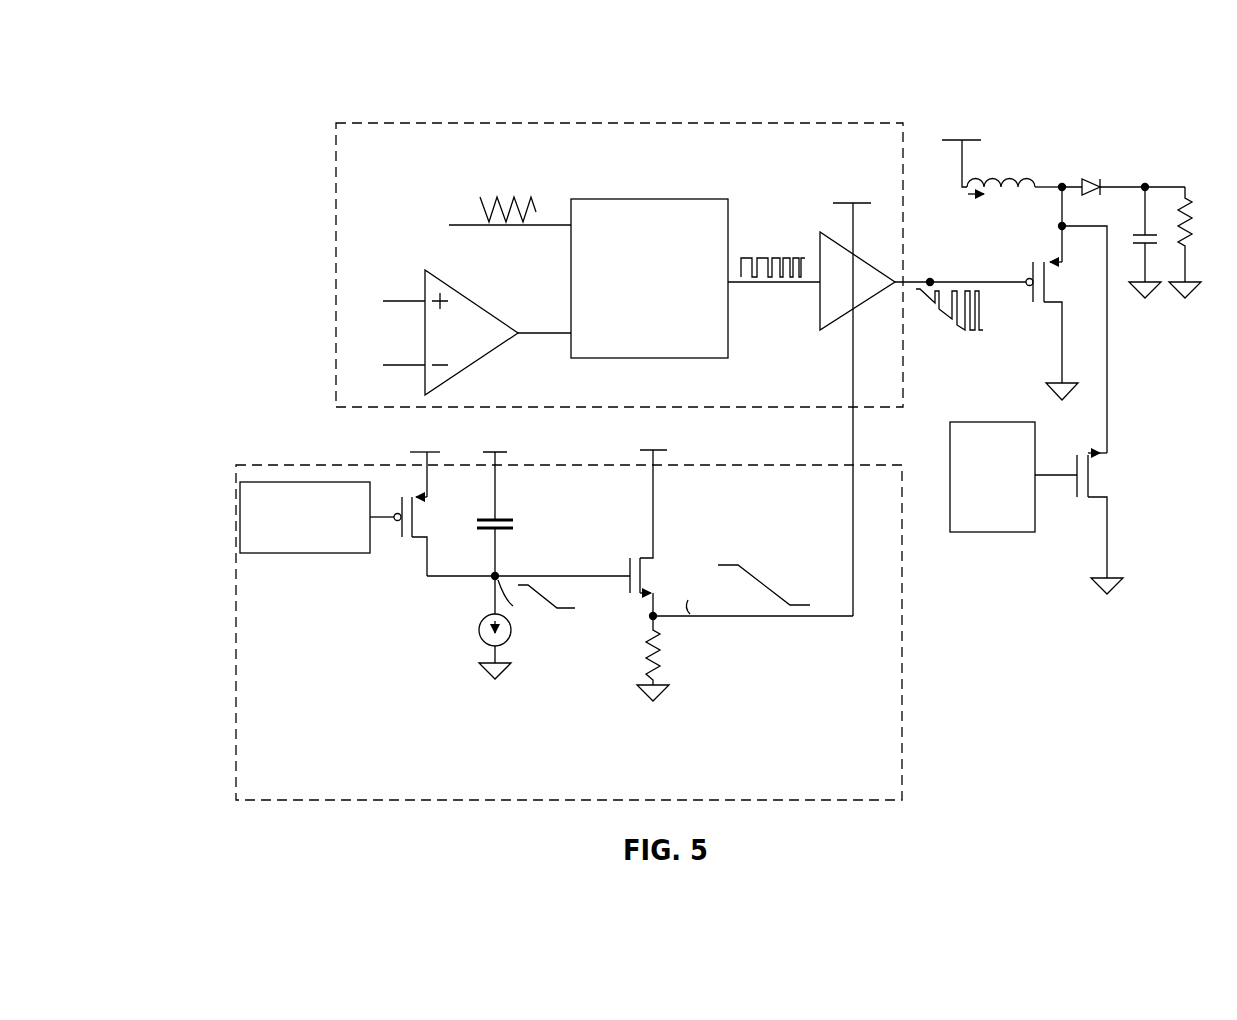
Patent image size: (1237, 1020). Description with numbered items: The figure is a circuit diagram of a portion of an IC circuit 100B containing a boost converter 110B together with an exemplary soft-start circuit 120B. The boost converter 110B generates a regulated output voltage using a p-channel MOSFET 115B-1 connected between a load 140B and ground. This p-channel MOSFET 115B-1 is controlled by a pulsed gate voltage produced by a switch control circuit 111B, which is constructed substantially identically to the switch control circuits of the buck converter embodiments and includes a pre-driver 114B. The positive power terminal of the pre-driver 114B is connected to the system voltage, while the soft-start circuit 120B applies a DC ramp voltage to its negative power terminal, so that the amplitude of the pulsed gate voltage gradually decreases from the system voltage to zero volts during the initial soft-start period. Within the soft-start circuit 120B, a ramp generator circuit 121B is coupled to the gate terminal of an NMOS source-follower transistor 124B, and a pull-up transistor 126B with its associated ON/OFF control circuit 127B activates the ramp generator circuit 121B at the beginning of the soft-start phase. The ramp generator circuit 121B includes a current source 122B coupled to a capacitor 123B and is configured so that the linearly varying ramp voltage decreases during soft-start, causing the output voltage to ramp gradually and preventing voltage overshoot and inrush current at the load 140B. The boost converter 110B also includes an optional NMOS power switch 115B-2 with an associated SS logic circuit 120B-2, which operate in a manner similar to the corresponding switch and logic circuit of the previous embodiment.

The IC circuit 100B is at (1013, 66).
The boost converter 110B is at (316, 158).
The switch control circuit 111B is at (619, 369).
The pre-driver 114B is at (857, 396).
The p-channel MOSFET 115B-1 is at (1031, 270).
The NMOS power switch 115B-2 is at (1076, 466).
The soft-start circuit 120B is at (569, 612).
The SS logic circuit 120B-2 is at (1013, 477).
The ramp generator circuit 121B is at (512, 552).
The current source 122B is at (501, 531).
The capacitor 123B is at (480, 637).
The NMOS source-follower transistor 124B is at (630, 594).
The pull-up transistor 126B is at (403, 536).
The ON/OFF control circuit 127B is at (317, 517).
The load 140B is at (1153, 150).